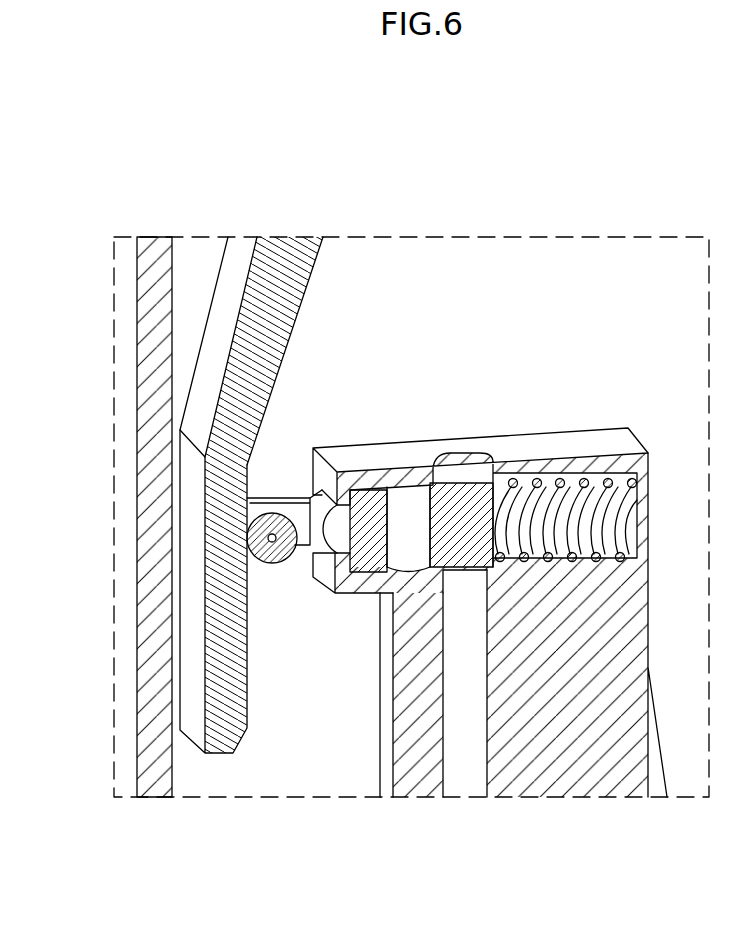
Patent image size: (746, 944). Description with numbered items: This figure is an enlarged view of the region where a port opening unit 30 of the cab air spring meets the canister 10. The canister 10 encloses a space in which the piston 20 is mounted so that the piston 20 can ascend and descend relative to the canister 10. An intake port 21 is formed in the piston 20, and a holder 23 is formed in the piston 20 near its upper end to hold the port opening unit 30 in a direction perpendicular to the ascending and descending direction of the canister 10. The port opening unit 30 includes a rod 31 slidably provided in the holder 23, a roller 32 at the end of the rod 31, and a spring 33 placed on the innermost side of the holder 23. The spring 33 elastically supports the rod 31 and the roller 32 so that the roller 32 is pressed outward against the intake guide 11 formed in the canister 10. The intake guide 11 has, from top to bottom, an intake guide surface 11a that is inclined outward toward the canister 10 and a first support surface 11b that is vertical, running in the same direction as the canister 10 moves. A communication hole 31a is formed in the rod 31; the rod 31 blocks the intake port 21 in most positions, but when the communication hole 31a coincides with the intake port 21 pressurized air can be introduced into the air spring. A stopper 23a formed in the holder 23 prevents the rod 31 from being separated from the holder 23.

The canister 10 is at (146, 368).
The intake guide 11 is at (235, 495).
The intake guide surface 11a is at (300, 312).
The first support surface 11b is at (248, 686).
The piston 20 is at (576, 772).
The intake port 21 is at (461, 745).
The holder 23 is at (475, 501).
The stopper 23a is at (330, 593).
The port opening unit 30 is at (442, 433).
The rod 31 is at (463, 496).
The communication hole 31a is at (409, 497).
The roller 32 is at (268, 514).
The spring 33 is at (566, 455).